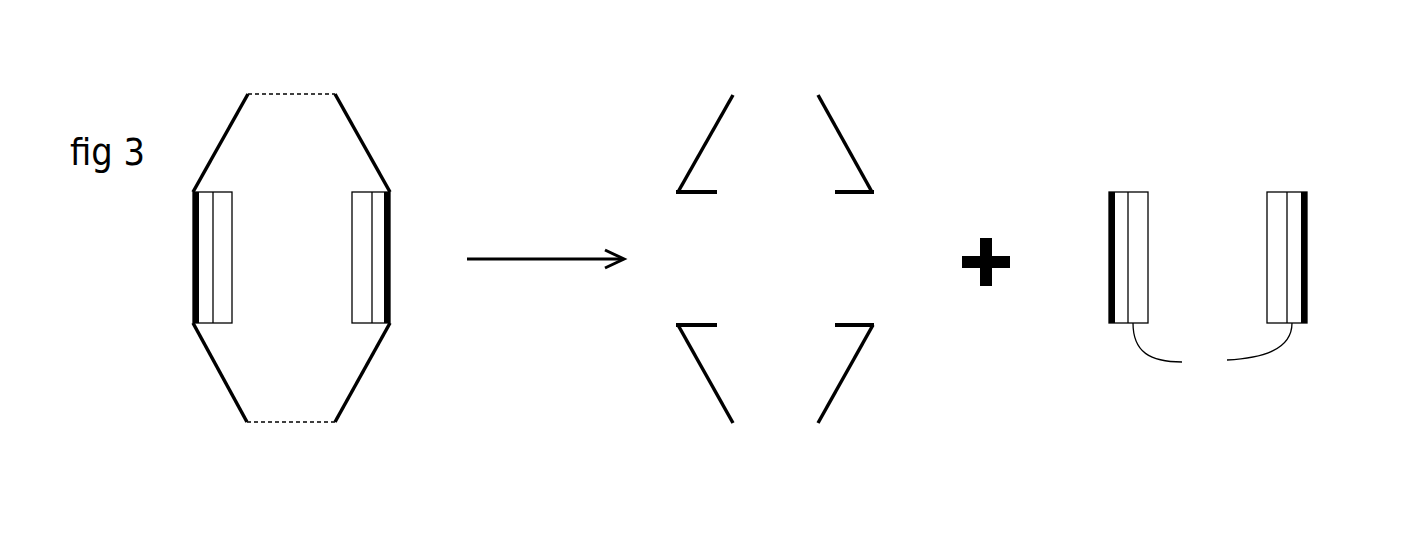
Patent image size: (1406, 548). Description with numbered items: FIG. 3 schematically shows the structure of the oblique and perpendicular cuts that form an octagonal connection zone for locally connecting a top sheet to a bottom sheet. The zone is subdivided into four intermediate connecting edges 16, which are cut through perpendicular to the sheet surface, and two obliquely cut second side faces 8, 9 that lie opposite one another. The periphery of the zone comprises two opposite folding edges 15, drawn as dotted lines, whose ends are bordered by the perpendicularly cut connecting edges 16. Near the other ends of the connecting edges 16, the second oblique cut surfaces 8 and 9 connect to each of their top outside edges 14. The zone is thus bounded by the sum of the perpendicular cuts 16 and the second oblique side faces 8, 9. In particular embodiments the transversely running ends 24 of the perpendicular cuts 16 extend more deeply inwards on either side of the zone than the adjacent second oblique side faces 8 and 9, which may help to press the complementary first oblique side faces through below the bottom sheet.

The second oblique cut surface 8 is at (227, 262).
The second oblique cut surface 9 is at (360, 272).
The top outside edge 14 is at (193, 222).
The folding edge 15 is at (292, 91).
The intermediate connecting edge 16 is at (225, 138).
The transversely running end 24 is at (710, 194).